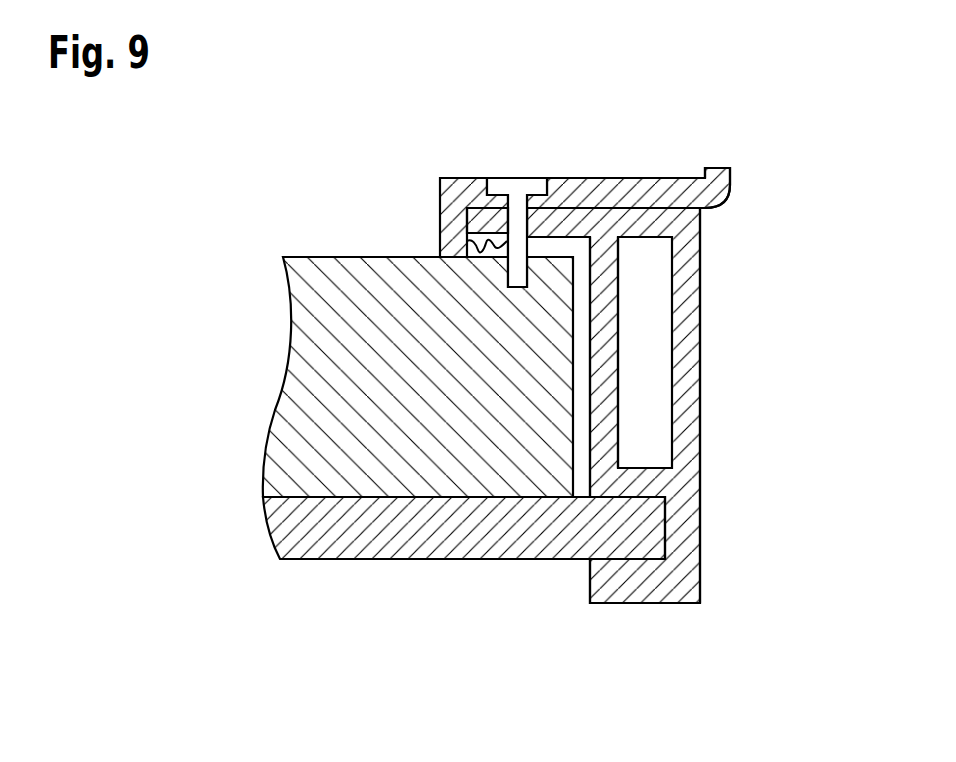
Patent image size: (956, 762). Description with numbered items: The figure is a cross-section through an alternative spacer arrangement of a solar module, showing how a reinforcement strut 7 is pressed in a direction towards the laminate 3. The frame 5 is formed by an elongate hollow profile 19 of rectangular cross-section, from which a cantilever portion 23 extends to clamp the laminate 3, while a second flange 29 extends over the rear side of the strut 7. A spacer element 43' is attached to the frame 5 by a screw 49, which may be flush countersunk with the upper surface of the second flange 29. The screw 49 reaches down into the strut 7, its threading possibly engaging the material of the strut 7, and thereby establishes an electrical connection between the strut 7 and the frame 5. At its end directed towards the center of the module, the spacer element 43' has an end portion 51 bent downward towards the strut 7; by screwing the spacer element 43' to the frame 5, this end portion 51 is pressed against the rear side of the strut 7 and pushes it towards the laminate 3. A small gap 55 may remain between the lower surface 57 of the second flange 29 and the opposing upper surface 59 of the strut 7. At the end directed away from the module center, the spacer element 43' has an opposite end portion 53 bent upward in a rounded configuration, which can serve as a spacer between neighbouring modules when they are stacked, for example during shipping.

The laminate 3 is at (410, 543).
The frame 5 is at (747, 388).
The reinforcement strut 7 is at (308, 343).
The hollow profile 19 is at (700, 318).
The cantilever portion 23 is at (647, 583).
The second flange 29 is at (612, 225).
The spacer element 43' is at (626, 138).
The screw 49 is at (519, 187).
The end portion 51 is at (425, 239).
The opposite end portion 53 is at (722, 180).
The gap 55 is at (547, 247).
The lower surface 57 is at (483, 250).
The upper surface 59 is at (467, 245).